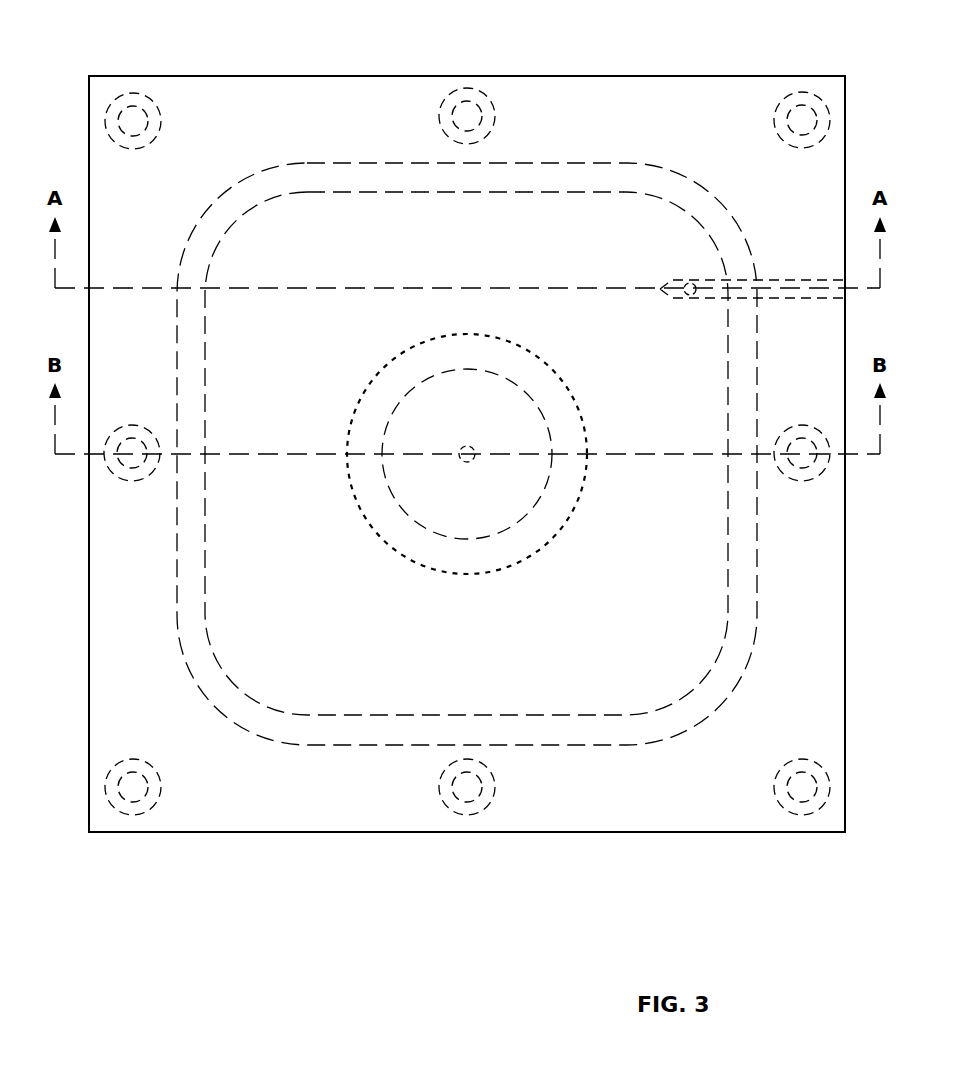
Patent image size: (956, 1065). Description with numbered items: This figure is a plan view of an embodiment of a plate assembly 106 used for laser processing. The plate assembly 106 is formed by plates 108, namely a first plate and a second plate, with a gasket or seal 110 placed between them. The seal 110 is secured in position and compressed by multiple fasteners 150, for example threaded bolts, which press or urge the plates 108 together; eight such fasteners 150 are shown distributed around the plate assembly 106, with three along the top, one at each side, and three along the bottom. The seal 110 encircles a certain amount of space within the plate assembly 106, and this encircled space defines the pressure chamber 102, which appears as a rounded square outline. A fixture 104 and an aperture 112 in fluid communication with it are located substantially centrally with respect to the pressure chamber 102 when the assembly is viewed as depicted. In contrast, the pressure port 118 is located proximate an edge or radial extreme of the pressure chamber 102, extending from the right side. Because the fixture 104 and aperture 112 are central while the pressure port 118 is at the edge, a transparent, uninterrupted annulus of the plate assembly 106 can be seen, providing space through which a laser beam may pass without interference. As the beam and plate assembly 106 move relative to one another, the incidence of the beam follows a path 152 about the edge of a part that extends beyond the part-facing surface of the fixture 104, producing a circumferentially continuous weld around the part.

The pressure chamber 102 is at (400, 192).
The fixture 104 is at (552, 482).
The plate assembly 106 is at (583, 66).
The plate 108 is at (225, 104).
The seal 110 is at (330, 172).
The aperture 112 is at (478, 446).
The pressure port 118 is at (815, 278).
The fastener 150 is at (133, 112).
The path 152 is at (374, 376).